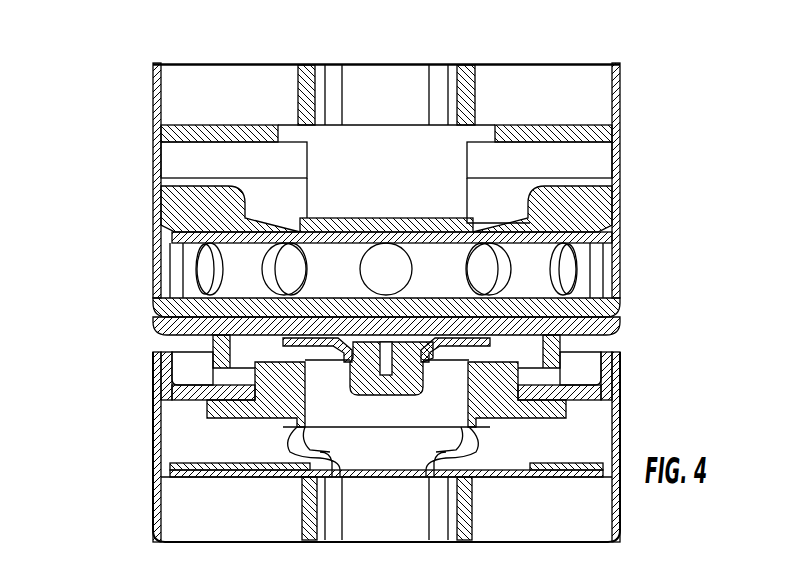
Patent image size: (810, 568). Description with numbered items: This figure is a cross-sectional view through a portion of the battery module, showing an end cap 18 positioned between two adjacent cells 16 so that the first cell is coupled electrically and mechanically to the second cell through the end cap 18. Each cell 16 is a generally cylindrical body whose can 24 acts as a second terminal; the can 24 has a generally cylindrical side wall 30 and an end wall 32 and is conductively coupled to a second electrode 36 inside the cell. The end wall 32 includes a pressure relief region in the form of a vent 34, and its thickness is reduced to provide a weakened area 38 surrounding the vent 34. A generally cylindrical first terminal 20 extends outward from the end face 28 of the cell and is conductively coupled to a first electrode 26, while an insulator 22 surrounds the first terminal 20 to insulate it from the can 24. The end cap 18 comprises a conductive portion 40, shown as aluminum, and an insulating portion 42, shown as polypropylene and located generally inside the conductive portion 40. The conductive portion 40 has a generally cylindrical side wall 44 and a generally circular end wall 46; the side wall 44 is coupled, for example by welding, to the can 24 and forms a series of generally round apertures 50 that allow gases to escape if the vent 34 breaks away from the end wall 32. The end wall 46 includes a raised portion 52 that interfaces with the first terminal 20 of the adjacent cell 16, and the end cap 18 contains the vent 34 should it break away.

The cell 16 is at (100, 80).
The end cap 18 is at (66, 212).
The first terminal 20 is at (495, 352).
The insulator 22 is at (565, 368).
The can 24 is at (618, 76).
The first electrode 26 is at (580, 462).
The end face 28 is at (592, 400).
The side wall 30 is at (615, 160).
The end wall 32 is at (578, 227).
The vent 34 is at (588, 250).
The second electrode 36 is at (590, 125).
The weakened area 38 is at (200, 252).
The conductive portion 40 is at (622, 300).
The insulating portion 42 is at (560, 333).
The side wall 44 is at (165, 228).
The end wall 46 is at (172, 322).
The apertures 50 is at (200, 273).
The raised portion 52 is at (174, 397).